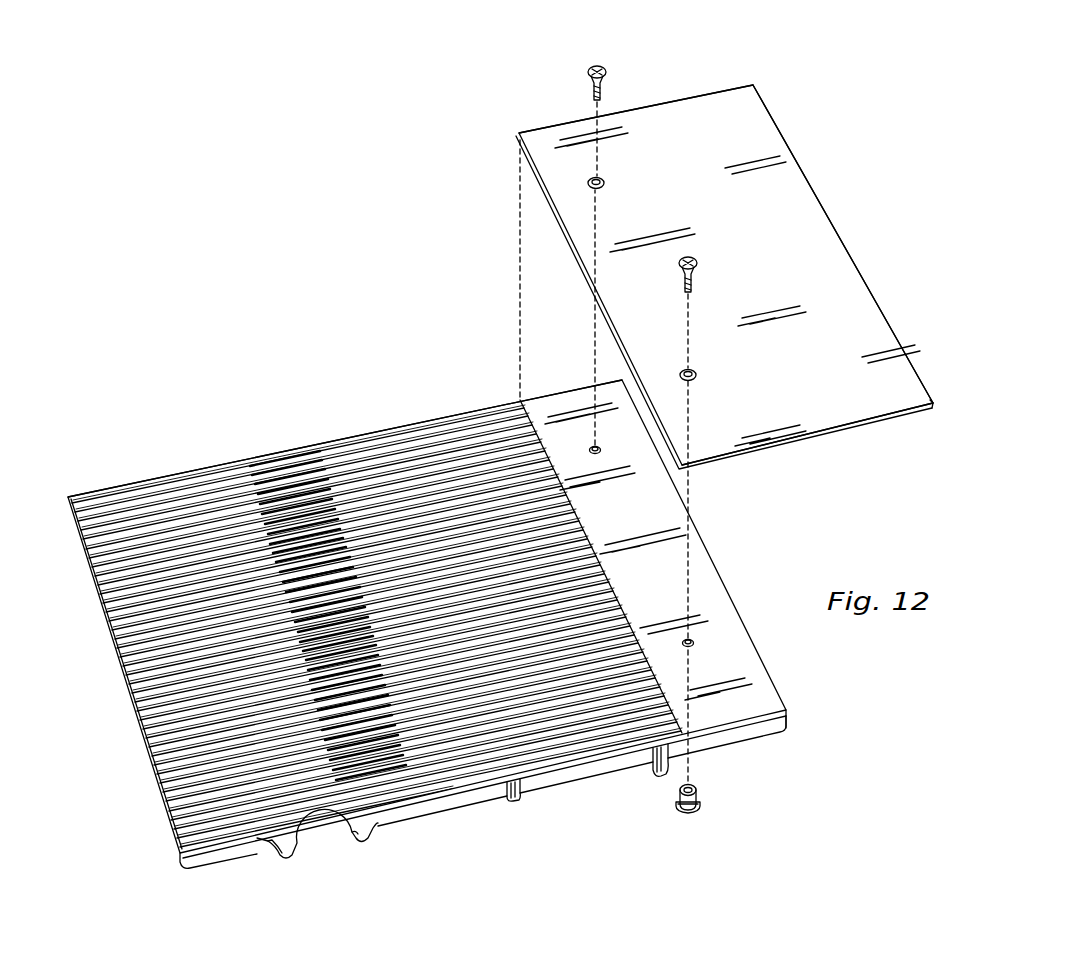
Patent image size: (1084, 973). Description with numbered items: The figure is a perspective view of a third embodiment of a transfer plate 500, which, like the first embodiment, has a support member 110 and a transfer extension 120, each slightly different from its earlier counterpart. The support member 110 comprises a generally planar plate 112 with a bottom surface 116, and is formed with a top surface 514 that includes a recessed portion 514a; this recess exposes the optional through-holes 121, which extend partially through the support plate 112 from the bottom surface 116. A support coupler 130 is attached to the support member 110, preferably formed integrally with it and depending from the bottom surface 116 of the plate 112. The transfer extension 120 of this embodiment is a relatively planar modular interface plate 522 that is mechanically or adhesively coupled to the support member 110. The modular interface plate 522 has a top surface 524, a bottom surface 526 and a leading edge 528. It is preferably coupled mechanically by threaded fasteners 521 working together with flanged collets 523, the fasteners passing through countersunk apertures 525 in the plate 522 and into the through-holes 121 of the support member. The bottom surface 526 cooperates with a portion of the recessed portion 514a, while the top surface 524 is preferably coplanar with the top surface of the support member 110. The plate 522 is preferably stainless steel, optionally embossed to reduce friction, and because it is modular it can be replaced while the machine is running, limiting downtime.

The transfer plate 500 is at (260, 262).
The support member 110 is at (120, 700).
The plate 112 is at (148, 497).
The bottom surface 116 is at (775, 733).
The transfer extension 120 is at (868, 253).
The through-holes 121 is at (594, 445).
The support coupler 130 is at (320, 851).
The top surface 514 is at (430, 616).
The recessed portion 514a is at (650, 519).
The threaded fasteners 521 is at (607, 73).
The modular interface plate 522 is at (793, 200).
The flanged collets 523 is at (700, 793).
The top surface 524 is at (699, 192).
The countersunk apertures 525 is at (588, 184).
The bottom surface 526 is at (762, 445).
The leading edge 528 is at (928, 410).